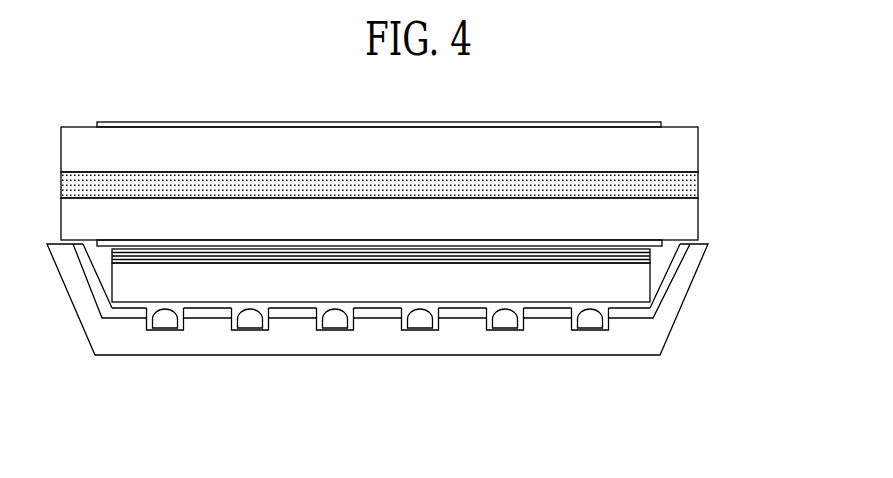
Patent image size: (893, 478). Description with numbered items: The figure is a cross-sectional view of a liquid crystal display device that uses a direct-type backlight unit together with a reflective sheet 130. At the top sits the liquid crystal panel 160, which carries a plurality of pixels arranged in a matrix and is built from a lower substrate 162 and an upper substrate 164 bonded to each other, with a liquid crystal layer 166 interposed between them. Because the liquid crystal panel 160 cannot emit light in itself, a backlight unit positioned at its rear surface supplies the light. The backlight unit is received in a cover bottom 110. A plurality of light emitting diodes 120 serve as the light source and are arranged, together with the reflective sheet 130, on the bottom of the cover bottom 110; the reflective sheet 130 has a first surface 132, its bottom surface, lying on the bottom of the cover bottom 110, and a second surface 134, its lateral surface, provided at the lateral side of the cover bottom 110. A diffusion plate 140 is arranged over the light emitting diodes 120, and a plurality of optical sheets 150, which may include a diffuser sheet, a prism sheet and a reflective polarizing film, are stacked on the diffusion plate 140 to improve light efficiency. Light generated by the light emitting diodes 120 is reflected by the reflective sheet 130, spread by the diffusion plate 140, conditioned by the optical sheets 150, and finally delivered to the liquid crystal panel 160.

The cover bottom 110 is at (647, 335).
The light emitting diode 120 is at (425, 322).
The reflective sheet 130 is at (361, 342).
The first surface 132 is at (212, 312).
The second surface 134 is at (207, 403).
The diffusion plate 140 is at (302, 278).
The optical sheets 150 is at (557, 256).
The liquid crystal panel 160 is at (439, 184).
The lower substrate 162 is at (690, 219).
The upper substrate 164 is at (690, 148).
The liquid crystal layer 166 is at (690, 185).